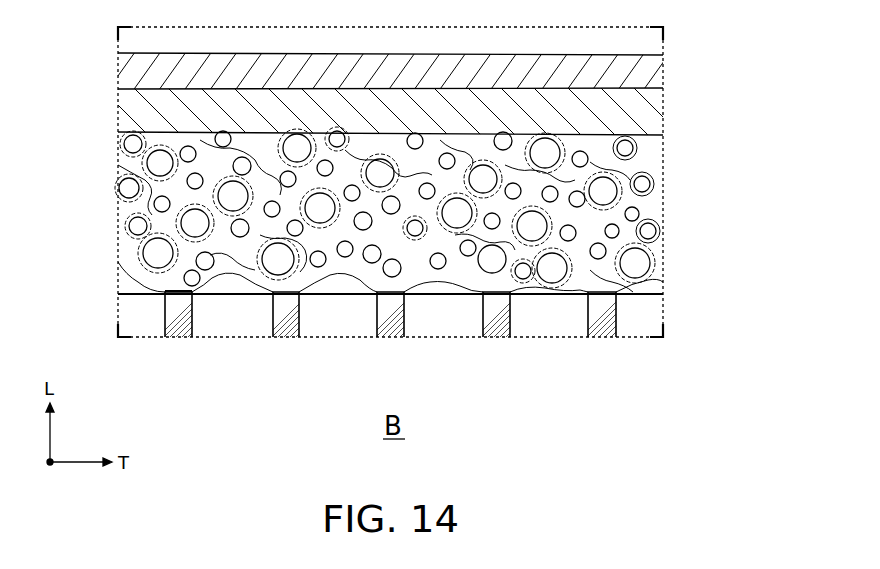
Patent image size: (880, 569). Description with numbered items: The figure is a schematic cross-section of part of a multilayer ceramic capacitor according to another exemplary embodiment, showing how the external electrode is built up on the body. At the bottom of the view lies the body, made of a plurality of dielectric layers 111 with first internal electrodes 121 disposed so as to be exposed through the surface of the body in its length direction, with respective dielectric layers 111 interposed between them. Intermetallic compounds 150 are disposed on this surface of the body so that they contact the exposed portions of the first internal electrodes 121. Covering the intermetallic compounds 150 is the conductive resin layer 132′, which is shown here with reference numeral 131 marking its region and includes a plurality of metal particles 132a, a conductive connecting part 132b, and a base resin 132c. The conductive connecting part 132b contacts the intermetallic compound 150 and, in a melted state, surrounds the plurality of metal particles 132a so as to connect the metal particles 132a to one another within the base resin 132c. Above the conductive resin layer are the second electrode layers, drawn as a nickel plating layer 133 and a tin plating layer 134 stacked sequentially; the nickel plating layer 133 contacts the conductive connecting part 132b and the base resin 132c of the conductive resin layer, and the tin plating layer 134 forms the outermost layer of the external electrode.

The tin (Sn) plating layer 134 is at (660, 85).
The nickel (Ni) plating layer 133 is at (660, 122).
The base resin 132c is at (658, 158).
The metal particles 132a is at (657, 192).
The conductive connecting part 132b is at (657, 220).
The conductive resin layer 132′ is at (768, 141).
The porous matrix layer 131 is at (452, 268).
The dielectric layers 111 is at (547, 320).
The first internal electrodes 121 is at (605, 330).
The intermetallic compounds 150 is at (177, 305).